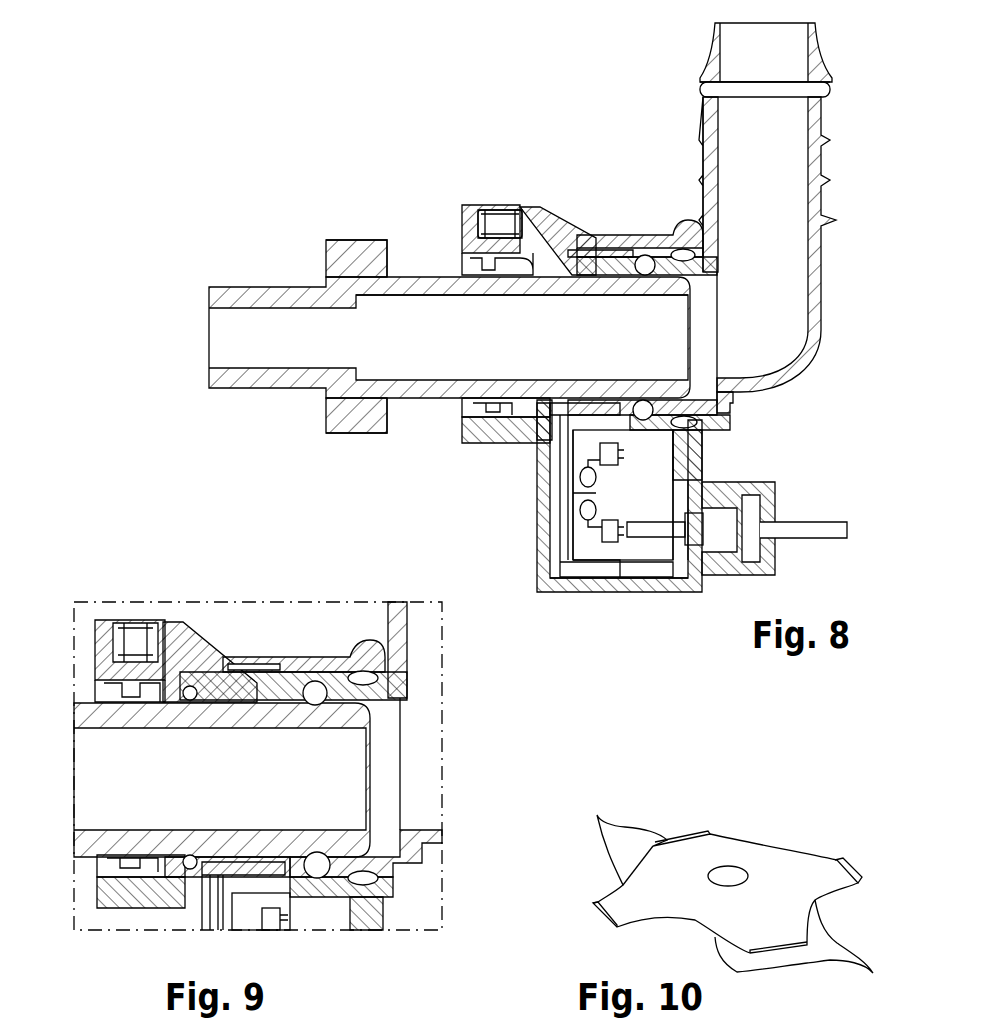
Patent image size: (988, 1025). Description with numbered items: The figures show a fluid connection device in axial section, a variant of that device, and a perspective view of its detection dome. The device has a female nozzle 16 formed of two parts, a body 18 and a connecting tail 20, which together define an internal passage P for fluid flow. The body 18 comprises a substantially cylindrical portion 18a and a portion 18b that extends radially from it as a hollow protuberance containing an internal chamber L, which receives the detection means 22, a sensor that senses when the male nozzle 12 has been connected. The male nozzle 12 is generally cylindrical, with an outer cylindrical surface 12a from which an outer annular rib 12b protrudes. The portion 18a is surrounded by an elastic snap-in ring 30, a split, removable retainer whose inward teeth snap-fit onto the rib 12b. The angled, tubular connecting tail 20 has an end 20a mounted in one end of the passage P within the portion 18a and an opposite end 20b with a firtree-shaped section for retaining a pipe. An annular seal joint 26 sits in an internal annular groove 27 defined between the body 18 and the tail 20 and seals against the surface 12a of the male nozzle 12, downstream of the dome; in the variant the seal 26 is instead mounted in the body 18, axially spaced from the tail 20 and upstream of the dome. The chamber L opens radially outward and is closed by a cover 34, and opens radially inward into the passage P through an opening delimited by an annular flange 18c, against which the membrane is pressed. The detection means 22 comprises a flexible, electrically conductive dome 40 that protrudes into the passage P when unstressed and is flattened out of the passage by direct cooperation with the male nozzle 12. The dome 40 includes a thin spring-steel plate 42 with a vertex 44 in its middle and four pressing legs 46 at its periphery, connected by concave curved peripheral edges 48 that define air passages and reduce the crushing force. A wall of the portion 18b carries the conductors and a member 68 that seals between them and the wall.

In FIG. 8, the male nozzle 12 is at (340, 448).
In FIG. 9, the male nozzle 12 is at (100, 832).
In FIG. 8, the outer cylindrical surface 12a is at (420, 388).
In FIG. 8, the outer annular rib 12b is at (495, 300).
In FIG. 8, the female nozzle 16 is at (822, 400).
In FIG. 8, the body 18 is at (518, 196).
In FIG. 9, the body 18 is at (205, 655).
In FIG. 8, the cylindrical portion of body 18a is at (553, 215).
In FIG. 8, the radial portion of body 18b is at (538, 512).
In FIG. 8, the annular flange 18c is at (530, 420).
In FIG. 9, the annular flange 18c is at (265, 880).
In FIG. 8, the connecting tail 20 is at (822, 285).
In FIG. 9, the connecting tail 20 is at (420, 660).
In FIG. 8, the end of tail 20a is at (725, 410).
In FIG. 8, the opposite end of tail 20b is at (828, 122).
In FIG. 8, the detection means 22 is at (627, 492).
In FIG. 8, the annular seal joint 26 is at (645, 254).
In FIG. 9, the annular seal joint 26 is at (196, 688).
In FIG. 8, the internal annular groove 27 is at (665, 240).
In FIG. 8, the elastic snap-in ring 30 is at (492, 216).
In FIG. 8, the cover 34 is at (578, 593).
In FIG. 8, the dome 40 is at (578, 410).
In FIG. 9, the dome 40 is at (228, 870).
In FIG. 10, the metal plate 42 is at (743, 892).
In FIG. 10, the vertex 44 is at (728, 868).
In FIG. 10, the pressing legs 46 is at (597, 815).
In FIG. 10, the concave curved peripheral edges 48 is at (873, 973).
In FIG. 8, the sealing member 68 is at (790, 525).
In FIG. 8, the internal chamber L is at (648, 485).
In FIG. 9, the internal chamber L is at (320, 915).
In FIG. 8, the internal passage P is at (570, 242).
In FIG. 9, the internal passage P is at (240, 690).